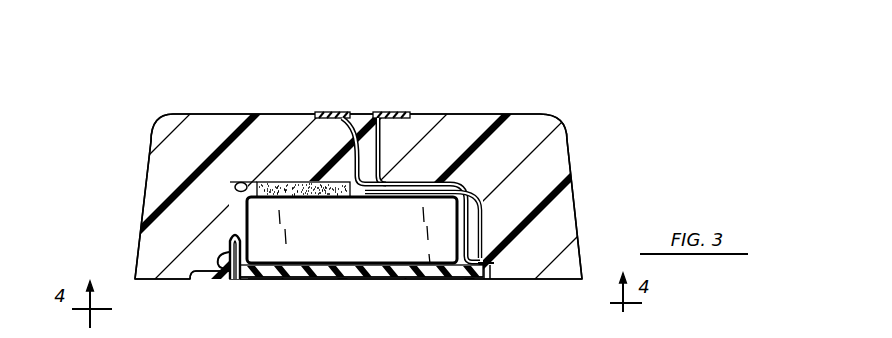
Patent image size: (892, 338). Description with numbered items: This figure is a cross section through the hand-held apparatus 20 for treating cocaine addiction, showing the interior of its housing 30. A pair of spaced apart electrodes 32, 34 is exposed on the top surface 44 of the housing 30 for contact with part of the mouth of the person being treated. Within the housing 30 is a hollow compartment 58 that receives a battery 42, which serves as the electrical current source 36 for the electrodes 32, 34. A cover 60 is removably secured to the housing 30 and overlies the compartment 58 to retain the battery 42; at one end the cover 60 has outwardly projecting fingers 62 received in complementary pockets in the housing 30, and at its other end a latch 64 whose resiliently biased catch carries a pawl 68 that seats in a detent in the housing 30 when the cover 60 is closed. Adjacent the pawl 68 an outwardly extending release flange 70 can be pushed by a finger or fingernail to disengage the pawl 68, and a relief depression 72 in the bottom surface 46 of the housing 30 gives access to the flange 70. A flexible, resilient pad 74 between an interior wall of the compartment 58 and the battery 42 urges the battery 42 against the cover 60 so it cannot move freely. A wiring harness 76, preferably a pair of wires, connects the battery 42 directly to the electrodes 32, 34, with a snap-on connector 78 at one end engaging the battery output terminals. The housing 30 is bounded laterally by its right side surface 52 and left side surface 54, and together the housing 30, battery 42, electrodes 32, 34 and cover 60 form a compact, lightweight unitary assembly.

The apparatus 20 is at (143, 127).
The housing 30 is at (560, 125).
The electrode 32 is at (334, 112).
The electrode 34 is at (396, 112).
The electrical current source 36 is at (428, 263).
The battery 42 is at (343, 237).
The top surface 44 is at (528, 104).
The bottom surface 46 is at (563, 288).
The right side surface 52 is at (590, 197).
The left side surface 54 is at (118, 183).
The hollow compartment 58 is at (233, 183).
The cover 60 is at (340, 277).
The fingers 62 is at (488, 276).
The latch 64 is at (235, 288).
The pawl 68 is at (222, 255).
The release flange 70 is at (222, 281).
The relief depression 72 is at (199, 280).
The pad 74 is at (283, 182).
The wiring harness 76 is at (422, 182).
The snap-on connector 78 is at (483, 203).